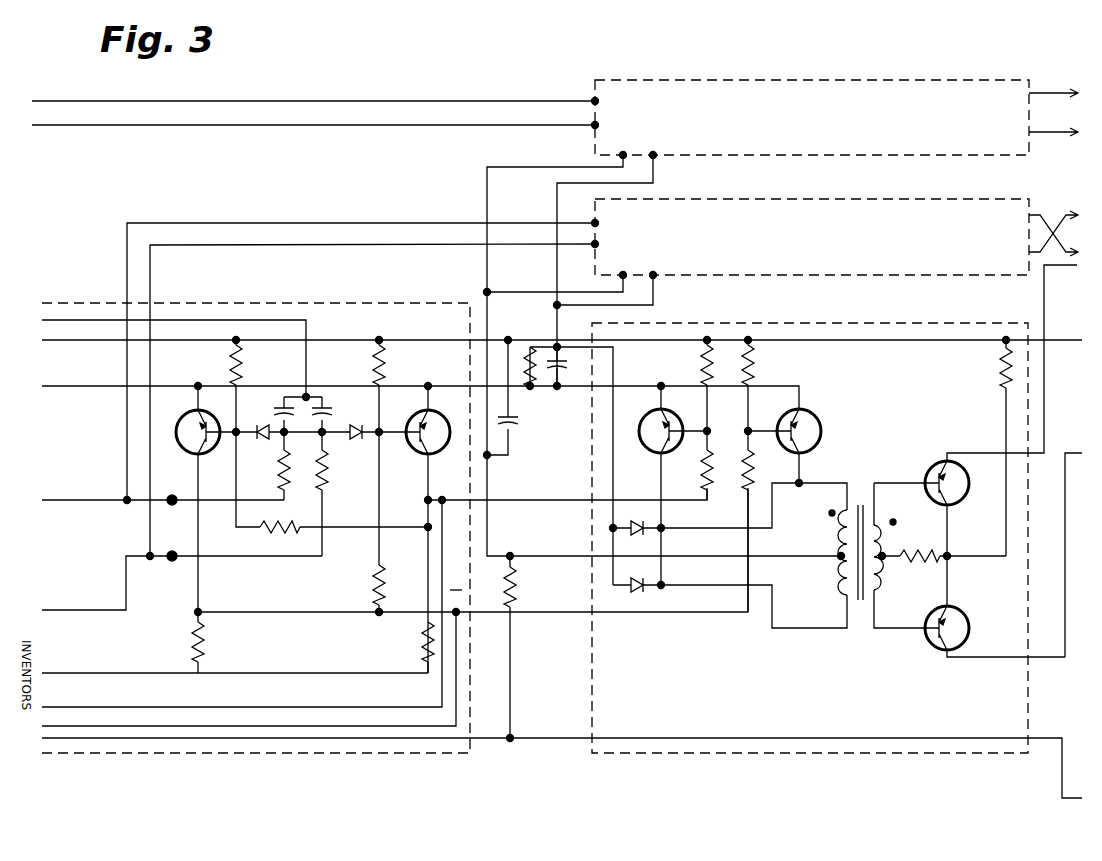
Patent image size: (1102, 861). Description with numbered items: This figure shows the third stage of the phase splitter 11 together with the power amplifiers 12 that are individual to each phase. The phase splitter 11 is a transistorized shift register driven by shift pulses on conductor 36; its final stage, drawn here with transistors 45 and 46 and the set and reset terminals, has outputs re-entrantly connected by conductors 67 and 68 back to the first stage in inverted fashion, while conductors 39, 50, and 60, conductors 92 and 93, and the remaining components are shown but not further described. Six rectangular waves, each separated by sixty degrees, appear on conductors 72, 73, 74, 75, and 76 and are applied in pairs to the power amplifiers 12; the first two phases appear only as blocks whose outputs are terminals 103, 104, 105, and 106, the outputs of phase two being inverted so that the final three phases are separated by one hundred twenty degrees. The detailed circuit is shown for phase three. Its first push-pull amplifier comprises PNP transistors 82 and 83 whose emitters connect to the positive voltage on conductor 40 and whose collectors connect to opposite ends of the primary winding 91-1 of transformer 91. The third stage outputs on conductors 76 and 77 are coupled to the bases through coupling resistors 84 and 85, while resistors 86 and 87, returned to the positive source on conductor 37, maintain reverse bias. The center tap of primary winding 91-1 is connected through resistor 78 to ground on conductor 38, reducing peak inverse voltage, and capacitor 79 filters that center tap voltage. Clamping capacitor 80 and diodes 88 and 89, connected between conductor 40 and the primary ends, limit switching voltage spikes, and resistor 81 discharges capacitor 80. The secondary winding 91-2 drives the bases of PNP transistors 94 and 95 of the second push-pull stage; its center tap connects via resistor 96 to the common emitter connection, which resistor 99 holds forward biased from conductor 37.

The phase splitter 11 is at (70, 302).
The power amplifier 12 is at (742, 80).
The conductor 36 is at (42, 320).
The conductor 37 is at (42, 340).
The conductor 38 is at (82, 740).
The line 39 is at (92, 674).
The conductor 40 is at (56, 386).
The transistor 45 is at (182, 416).
The transistor 46 is at (434, 414).
The set line 50 is at (82, 503).
The reset line 60 is at (82, 612).
The conductor 67 is at (56, 707).
The conductor 68 is at (72, 726).
The conductor 72 is at (50, 101).
The conductor 73 is at (56, 125).
The conductor 74 is at (127, 272).
The conductor 75 is at (150, 286).
The conductor 76 is at (536, 503).
The conductor 77 is at (554, 614).
The resistor 78 is at (514, 584).
The capacitor 79 is at (514, 420).
The capacitor 80 is at (566, 354).
The resistor 81 is at (532, 344).
The transistor 82 is at (648, 414).
The transistor 83 is at (810, 416).
The coupling resistor 84 is at (700, 470).
The coupling resistor 85 is at (754, 468).
The resistor 86 is at (700, 364).
The resistor 87 is at (754, 362).
The diode 88 is at (640, 524).
The diode 89 is at (644, 588).
The transformer 91 is at (860, 542).
The primary winding 91-1 is at (838, 534).
The secondary winding 91-2 is at (884, 548).
The line 92 is at (1062, 266).
The line 93 is at (1060, 456).
The transistor 94 is at (934, 466).
The transistor 95 is at (928, 648).
The resistor 96 is at (906, 560).
The resistor 99 is at (993, 447).
The terminal 103 is at (1060, 74).
The terminal 104 is at (1064, 116).
The terminal 105 is at (1066, 200).
The terminal 106 is at (1058, 256).